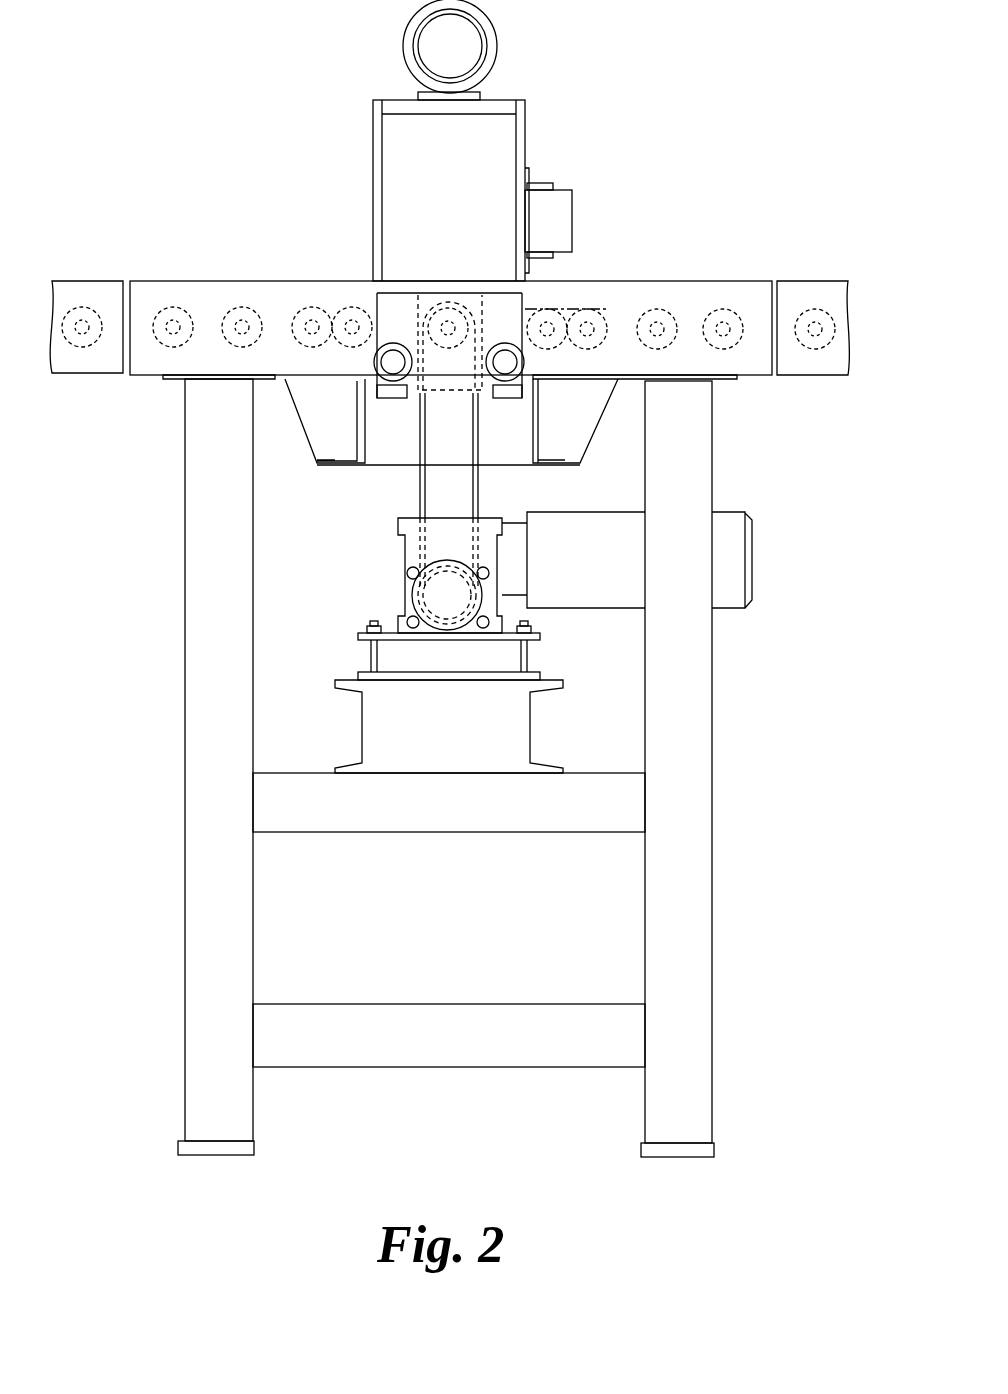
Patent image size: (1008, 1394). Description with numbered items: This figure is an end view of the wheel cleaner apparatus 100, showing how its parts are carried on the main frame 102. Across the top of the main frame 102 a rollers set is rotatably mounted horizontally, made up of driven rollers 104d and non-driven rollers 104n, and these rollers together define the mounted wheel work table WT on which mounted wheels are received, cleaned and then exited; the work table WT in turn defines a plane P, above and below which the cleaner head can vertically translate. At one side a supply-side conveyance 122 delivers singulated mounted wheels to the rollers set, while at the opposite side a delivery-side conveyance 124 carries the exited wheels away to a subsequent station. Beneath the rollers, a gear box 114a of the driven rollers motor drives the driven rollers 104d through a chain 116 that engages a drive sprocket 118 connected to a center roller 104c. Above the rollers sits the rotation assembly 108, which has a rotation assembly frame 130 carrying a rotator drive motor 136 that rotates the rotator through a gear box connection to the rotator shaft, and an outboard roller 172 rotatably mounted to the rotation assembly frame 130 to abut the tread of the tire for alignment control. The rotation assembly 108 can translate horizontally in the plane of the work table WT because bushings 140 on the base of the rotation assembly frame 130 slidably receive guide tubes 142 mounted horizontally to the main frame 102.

The wheel cleaner apparatus 100 is at (700, 197).
The main frame 102 is at (719, 900).
The center roller 104c is at (447, 357).
The driven rollers 104d is at (229, 312).
The non-driven rollers 104n is at (296, 315).
The rotation assembly 108 is at (540, 152).
The gear box 114a is at (413, 592).
The chain 116 is at (423, 498).
The drive sprocket 118 is at (431, 300).
The supply-side conveyance 122 is at (826, 385).
The delivery-side conveyance 124 is at (88, 384).
The rotation assembly frame 130 is at (373, 160).
The rotator drive motor 136 is at (498, 33).
The bushings 140 is at (373, 358).
The guide tubes 142 is at (392, 366).
The outboard roller 172 is at (581, 213).
The plane P is at (568, 306).
The work table WT is at (735, 308).